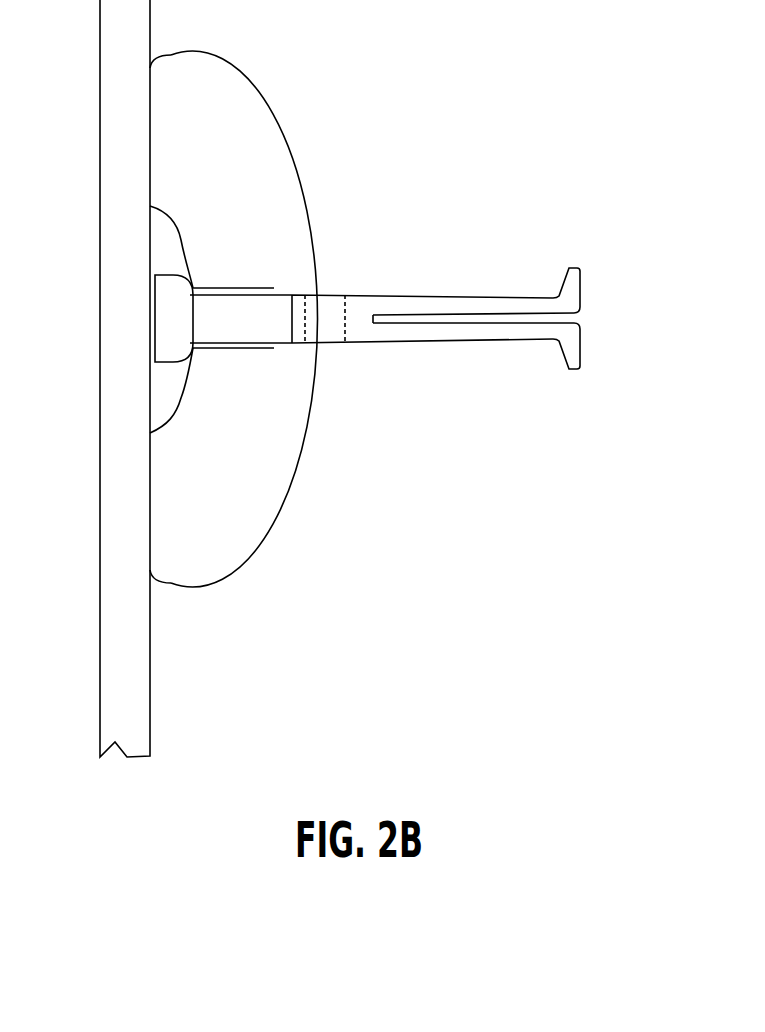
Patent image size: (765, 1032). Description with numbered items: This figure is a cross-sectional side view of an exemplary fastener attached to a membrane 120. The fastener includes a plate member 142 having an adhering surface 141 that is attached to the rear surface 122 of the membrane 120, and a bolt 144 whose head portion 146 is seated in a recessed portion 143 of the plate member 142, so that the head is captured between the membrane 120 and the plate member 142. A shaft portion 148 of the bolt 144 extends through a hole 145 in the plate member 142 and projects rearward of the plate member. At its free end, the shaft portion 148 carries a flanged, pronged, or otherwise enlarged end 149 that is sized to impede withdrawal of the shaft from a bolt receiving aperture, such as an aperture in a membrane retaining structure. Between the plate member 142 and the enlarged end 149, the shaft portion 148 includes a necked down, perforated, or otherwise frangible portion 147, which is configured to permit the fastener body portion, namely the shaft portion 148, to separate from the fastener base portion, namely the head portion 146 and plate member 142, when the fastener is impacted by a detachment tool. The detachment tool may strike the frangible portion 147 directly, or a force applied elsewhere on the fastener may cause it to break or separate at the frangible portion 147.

The membrane 120 is at (222, 728).
The rear surface 122 is at (150, 662).
The adhering surface 141 is at (157, 487).
The plate member 142 is at (303, 473).
The recessed portion 143 is at (183, 407).
The bolt 144 is at (395, 258).
The hole 145 is at (219, 289).
The head portion 146 is at (170, 318).
The frangible portion 147 is at (322, 294).
The shaft portion 148 is at (523, 340).
The enlarged end 149 is at (581, 294).